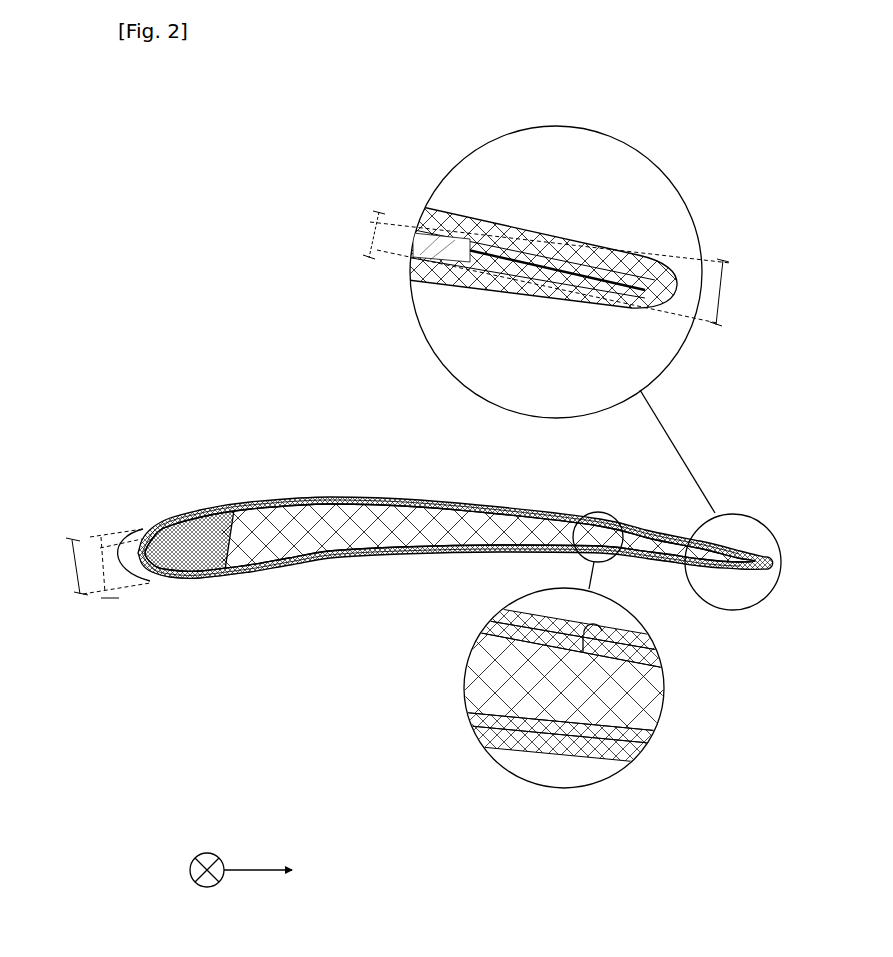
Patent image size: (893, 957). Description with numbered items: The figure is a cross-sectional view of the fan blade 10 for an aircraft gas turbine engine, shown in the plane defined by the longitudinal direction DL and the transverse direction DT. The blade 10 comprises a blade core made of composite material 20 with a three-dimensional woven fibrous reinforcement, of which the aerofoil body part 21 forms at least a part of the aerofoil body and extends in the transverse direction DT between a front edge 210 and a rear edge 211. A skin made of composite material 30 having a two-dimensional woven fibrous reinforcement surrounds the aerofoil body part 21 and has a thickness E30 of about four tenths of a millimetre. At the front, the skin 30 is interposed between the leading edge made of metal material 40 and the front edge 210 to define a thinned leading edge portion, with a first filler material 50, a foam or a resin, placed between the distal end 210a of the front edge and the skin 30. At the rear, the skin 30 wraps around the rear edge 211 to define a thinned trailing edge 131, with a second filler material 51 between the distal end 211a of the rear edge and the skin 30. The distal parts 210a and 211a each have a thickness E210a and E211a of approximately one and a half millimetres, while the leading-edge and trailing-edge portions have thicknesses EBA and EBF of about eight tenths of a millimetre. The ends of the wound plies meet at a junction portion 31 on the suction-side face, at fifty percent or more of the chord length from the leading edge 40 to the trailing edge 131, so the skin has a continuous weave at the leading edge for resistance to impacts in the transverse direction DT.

The fan blade 10 is at (348, 497).
The blade core made of composite material 20 is at (372, 547).
The aerofoil body part 21 is at (422, 535).
The skin made of composite material 30 is at (462, 500).
The junction portion 31 is at (600, 626).
The leading edge made of metal material 40 is at (143, 586).
The first filler material 50 is at (189, 526).
The second filler material 51 is at (520, 280).
The trailing edge 131 is at (674, 279).
The front edge 210 is at (284, 572).
The distal end of the front edge 210a is at (224, 560).
The rear edge 211 is at (703, 569).
The distal end of the rear edge 211a is at (508, 240).
The thickness of the skin E30 is at (503, 523).
The thickness of the distal part of the front edge E210a is at (62, 566).
The thickness of the leading-edge preform portion EBA is at (104, 611).
The thickness of the distal part of the rear edge E211a is at (528, 267).
The thickness of the trailing-edge preform portion EBF is at (729, 292).
The longitudinal direction DL is at (207, 859).
The transverse direction DT is at (272, 870).